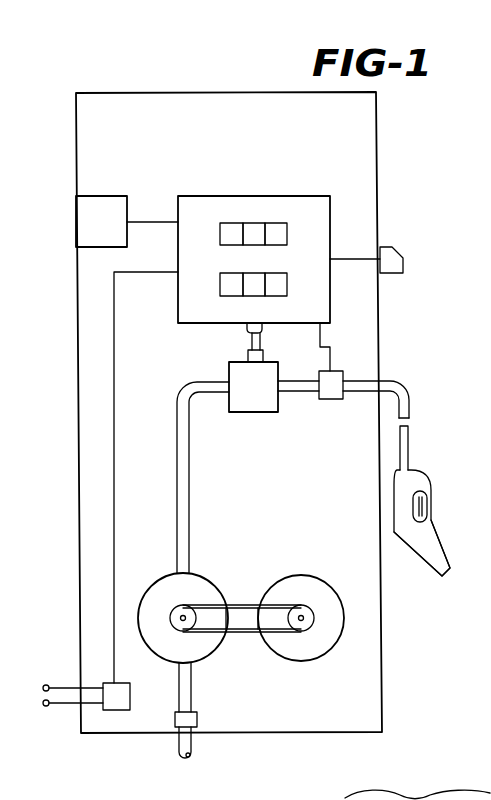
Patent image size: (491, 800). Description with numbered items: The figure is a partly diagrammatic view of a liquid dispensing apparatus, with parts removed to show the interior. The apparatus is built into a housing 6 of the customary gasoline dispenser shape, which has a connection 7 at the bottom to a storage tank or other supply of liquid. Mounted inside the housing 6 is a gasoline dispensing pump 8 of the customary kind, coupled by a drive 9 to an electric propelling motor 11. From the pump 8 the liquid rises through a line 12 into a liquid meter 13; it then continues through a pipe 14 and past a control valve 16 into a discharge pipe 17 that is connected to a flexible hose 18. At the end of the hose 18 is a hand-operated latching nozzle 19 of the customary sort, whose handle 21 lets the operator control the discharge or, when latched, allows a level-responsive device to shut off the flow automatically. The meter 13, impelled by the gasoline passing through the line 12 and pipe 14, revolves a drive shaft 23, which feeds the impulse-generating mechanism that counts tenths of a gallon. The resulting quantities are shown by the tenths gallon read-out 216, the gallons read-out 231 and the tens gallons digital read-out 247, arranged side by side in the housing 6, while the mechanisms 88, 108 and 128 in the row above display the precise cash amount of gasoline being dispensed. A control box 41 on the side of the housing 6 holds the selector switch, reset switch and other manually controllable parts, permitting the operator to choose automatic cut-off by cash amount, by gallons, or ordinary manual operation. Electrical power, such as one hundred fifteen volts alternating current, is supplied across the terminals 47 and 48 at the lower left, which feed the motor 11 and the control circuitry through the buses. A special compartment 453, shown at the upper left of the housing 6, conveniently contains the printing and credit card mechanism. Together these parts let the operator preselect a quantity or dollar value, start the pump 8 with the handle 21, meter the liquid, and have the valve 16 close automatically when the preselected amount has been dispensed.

The housing 6 is at (375, 688).
The connection 7 is at (198, 720).
The gasoline dispensing pump 8 is at (200, 590).
The drive 9 is at (238, 634).
The electric propelling motor 11 is at (318, 578).
The line 12 is at (190, 503).
The liquid meter 13 is at (247, 404).
The pipe 14 is at (298, 389).
The control valve 16 is at (329, 396).
The discharge pipe 17 is at (368, 384).
The flexible hose 18 is at (404, 440).
The hand-operated latching nozzle 19 is at (420, 548).
The handle 21 is at (423, 500).
The drive shaft 23 is at (252, 345).
The control box 41 is at (394, 256).
The terminal 47 is at (60, 684).
The terminal 48 is at (60, 710).
The display mechanism 88 is at (273, 238).
The display mechanism 108 is at (250, 238).
The display mechanism 128 is at (230, 238).
The tenths gallon read-out 216 is at (286, 286).
The gallons read-out 231 is at (248, 284).
The tens gallons digital read-out 247 is at (228, 278).
The special compartment 453 is at (79, 224).